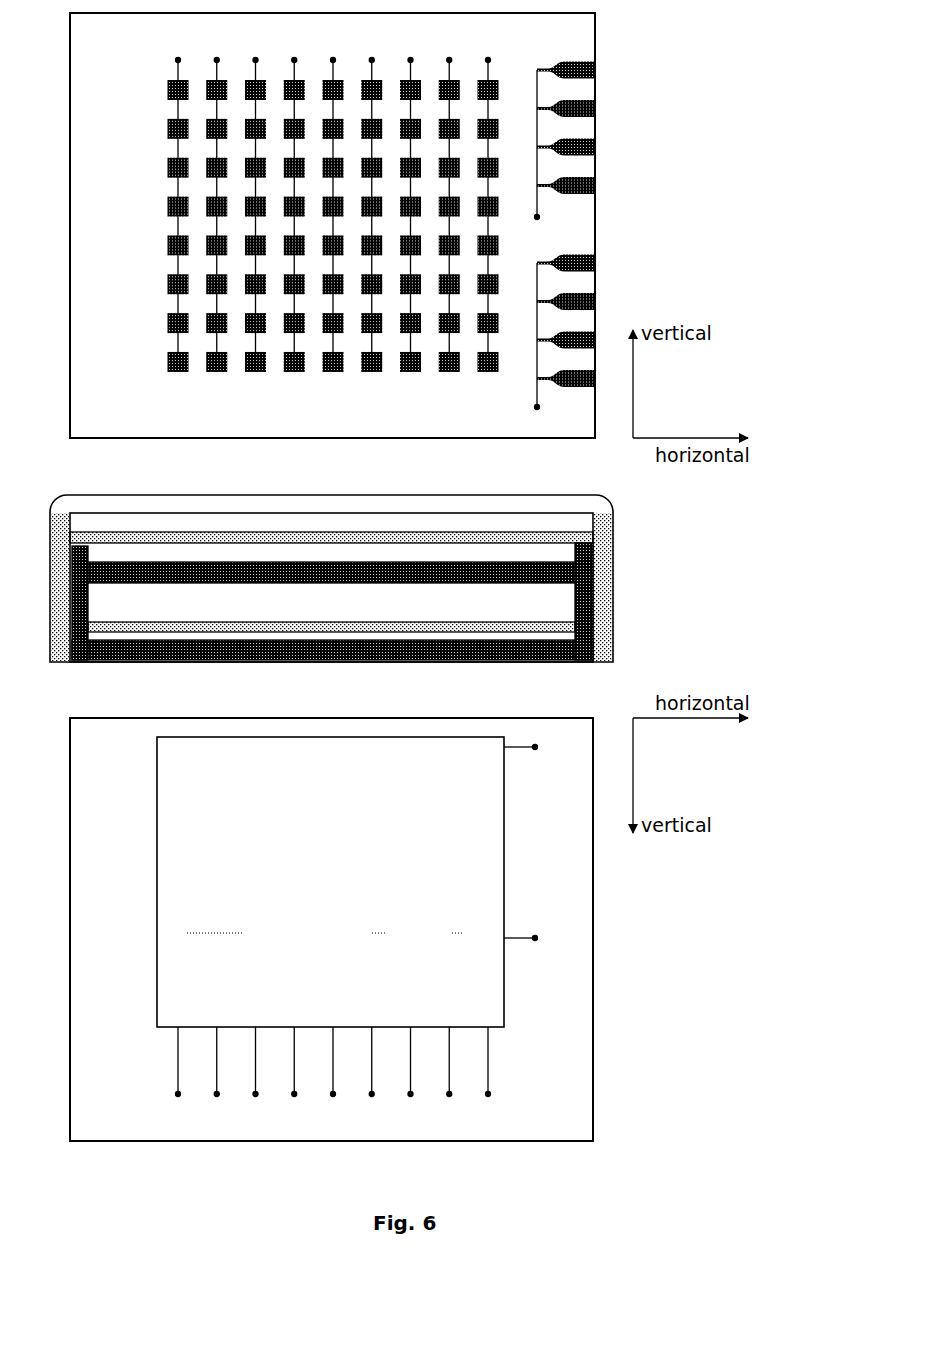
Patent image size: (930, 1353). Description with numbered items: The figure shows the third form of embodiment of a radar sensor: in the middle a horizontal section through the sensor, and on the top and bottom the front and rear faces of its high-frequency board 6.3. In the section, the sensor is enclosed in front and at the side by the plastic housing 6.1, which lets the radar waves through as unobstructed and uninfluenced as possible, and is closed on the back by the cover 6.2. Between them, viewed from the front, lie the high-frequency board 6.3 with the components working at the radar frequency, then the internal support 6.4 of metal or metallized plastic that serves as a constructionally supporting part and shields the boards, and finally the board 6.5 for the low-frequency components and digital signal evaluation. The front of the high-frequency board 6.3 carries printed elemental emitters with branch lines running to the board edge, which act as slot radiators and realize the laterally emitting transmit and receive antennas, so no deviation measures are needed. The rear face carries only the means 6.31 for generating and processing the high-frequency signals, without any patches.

The plastic housing 6.1 is at (560, 508).
The cover 6.2 is at (553, 650).
The high-frequency board 6.3 is at (595, 52).
The internal support 6.4 is at (578, 574).
The board for the low-frequency components 6.5 is at (575, 630).
The means for generating and processing high frequency signals 6.31 is at (197, 983).